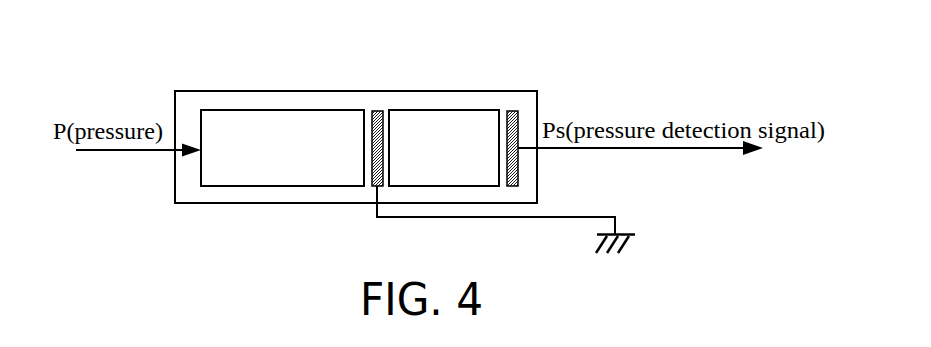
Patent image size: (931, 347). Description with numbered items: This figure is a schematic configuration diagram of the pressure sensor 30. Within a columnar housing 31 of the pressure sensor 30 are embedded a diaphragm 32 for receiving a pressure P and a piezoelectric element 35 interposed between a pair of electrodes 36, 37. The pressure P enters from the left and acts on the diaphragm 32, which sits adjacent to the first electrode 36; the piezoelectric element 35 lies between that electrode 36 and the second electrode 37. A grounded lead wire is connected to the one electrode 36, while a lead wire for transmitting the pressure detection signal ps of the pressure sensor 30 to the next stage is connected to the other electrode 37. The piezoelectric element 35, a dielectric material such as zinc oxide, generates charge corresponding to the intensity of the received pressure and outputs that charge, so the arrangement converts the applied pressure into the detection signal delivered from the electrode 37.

The pressure sensor 30 is at (462, 147).
The columnar housing 31 is at (460, 91).
The diaphragm 32 is at (345, 187).
The piezoelectric element 35 is at (420, 110).
The electrode 36 is at (377, 110).
The electrode 37 is at (513, 111).